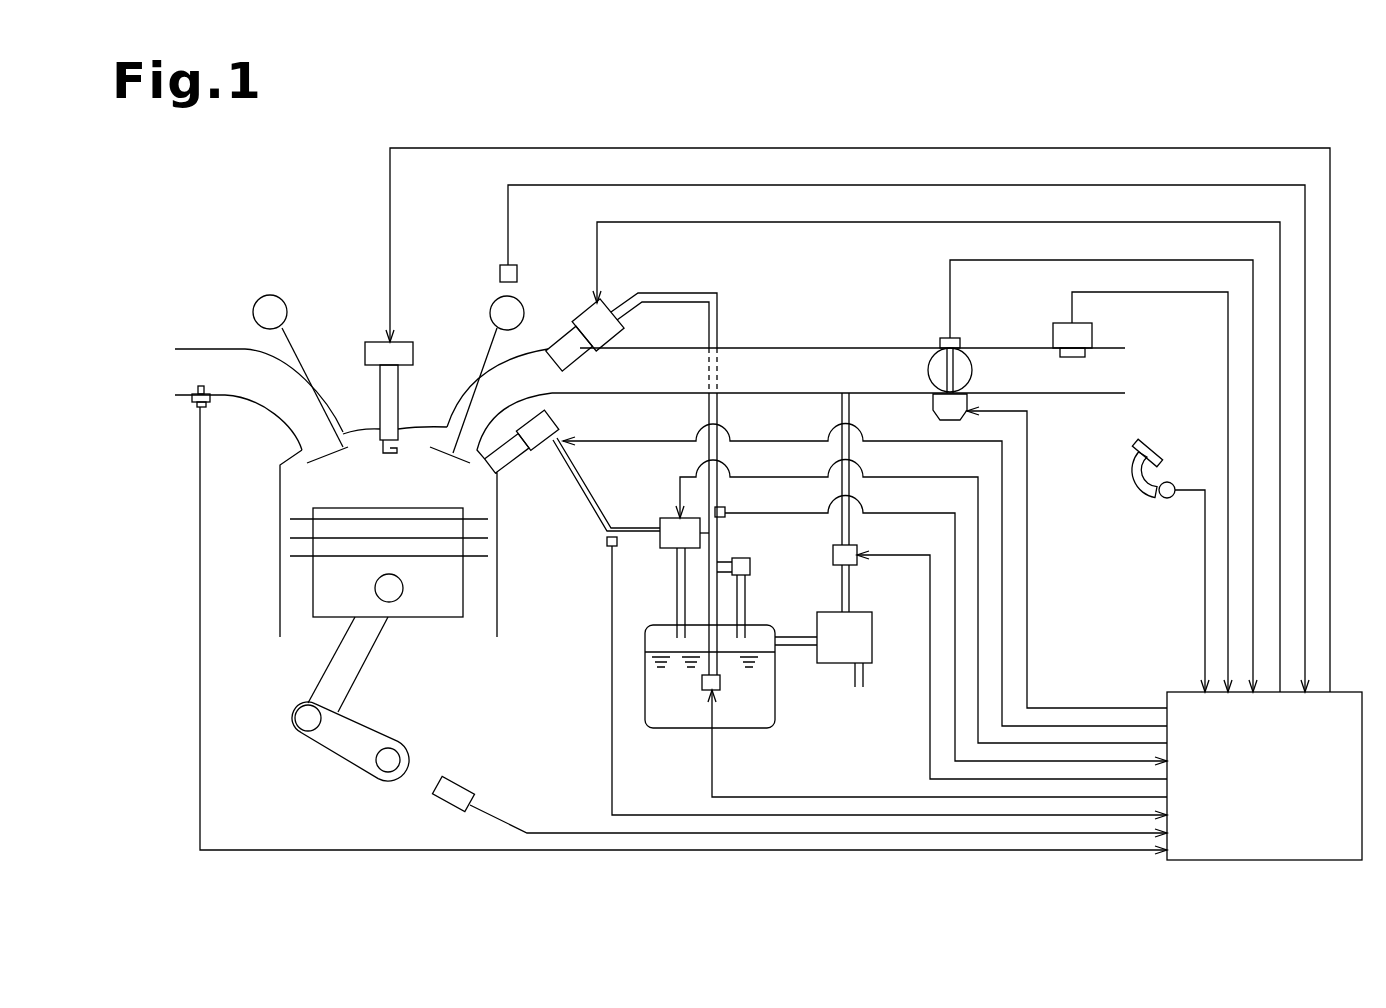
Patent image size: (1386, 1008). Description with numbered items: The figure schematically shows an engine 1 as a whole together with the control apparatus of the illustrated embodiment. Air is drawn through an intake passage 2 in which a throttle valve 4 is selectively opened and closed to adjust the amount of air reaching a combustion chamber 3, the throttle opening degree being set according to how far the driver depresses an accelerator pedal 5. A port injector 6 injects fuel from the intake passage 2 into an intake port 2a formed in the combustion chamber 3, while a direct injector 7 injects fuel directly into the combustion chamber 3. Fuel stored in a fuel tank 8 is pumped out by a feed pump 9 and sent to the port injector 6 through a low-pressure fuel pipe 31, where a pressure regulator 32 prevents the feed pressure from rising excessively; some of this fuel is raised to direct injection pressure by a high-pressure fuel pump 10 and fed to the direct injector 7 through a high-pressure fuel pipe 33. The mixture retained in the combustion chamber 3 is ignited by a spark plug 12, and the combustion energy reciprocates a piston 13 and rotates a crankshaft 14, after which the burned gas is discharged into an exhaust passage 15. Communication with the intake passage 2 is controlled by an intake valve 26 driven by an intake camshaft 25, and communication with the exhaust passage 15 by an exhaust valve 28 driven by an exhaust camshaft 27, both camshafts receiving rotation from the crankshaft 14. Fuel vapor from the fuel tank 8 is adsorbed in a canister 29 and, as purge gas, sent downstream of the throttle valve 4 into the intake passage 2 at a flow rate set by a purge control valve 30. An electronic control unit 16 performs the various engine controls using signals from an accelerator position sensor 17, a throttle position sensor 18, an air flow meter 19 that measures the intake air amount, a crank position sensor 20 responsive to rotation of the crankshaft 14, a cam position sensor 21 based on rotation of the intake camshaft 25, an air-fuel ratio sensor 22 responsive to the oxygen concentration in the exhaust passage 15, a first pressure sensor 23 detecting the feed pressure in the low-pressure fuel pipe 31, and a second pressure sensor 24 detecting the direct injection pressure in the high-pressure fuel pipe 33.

The engine 1 is at (243, 238).
The intake passage 2 is at (652, 392).
The intake port 2a is at (436, 430).
The combustion chamber 3 is at (307, 488).
The throttle valve 4 is at (972, 368).
The accelerator pedal 5 is at (1135, 450).
The port injector 6 is at (575, 306).
The direct injector 7 is at (541, 457).
The fuel tank 8 is at (680, 730).
The feed pump 9 is at (722, 680).
The high-pressure fuel pump 10 is at (663, 518).
The spark plug 12 is at (380, 395).
The piston 13 is at (443, 621).
The crankshaft 14 is at (403, 757).
The exhaust passage 15 is at (206, 350).
The electronic control unit 16 is at (1170, 690).
The accelerator position sensor 17 is at (1177, 480).
The throttle position sensor 18 is at (946, 337).
The air flow meter 19 is at (1093, 330).
The crank position sensor 20 is at (470, 784).
The cam position sensor 21 is at (500, 274).
The air-fuel ratio sensor 22 is at (190, 399).
The first pressure sensor 23 is at (725, 513).
The second pressure sensor 24 is at (607, 543).
The intake camshaft 25 is at (490, 313).
The intake valve 26 is at (474, 391).
The exhaust camshaft 27 is at (287, 310).
The exhaust valve 28 is at (312, 381).
The canister 29 is at (873, 622).
The purge control valve 30 is at (834, 568).
The low-pressure fuel pipe 31 is at (725, 535).
The pressure regulator 32 is at (752, 568).
The high-pressure fuel pipe 33 is at (585, 505).